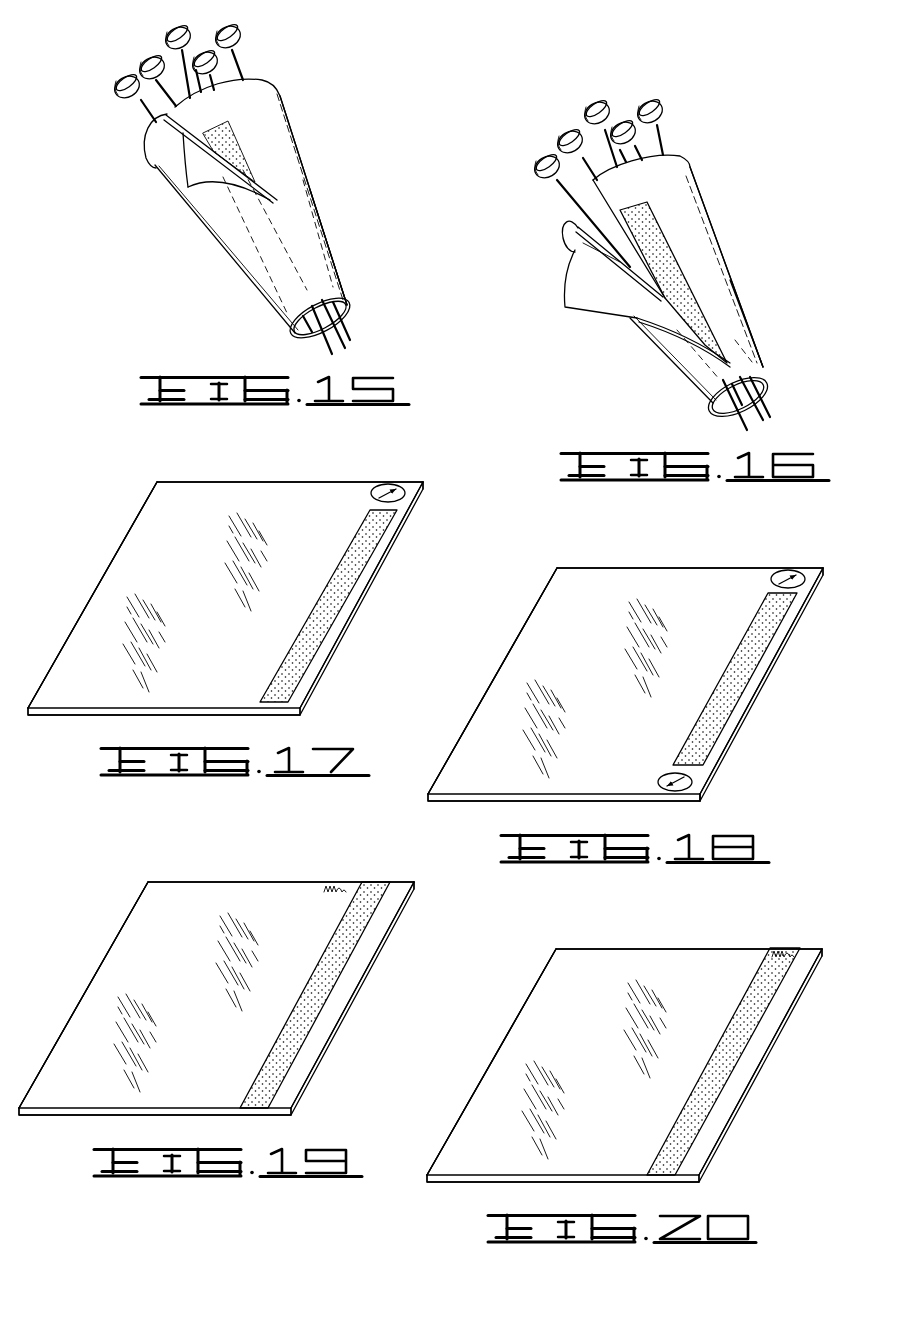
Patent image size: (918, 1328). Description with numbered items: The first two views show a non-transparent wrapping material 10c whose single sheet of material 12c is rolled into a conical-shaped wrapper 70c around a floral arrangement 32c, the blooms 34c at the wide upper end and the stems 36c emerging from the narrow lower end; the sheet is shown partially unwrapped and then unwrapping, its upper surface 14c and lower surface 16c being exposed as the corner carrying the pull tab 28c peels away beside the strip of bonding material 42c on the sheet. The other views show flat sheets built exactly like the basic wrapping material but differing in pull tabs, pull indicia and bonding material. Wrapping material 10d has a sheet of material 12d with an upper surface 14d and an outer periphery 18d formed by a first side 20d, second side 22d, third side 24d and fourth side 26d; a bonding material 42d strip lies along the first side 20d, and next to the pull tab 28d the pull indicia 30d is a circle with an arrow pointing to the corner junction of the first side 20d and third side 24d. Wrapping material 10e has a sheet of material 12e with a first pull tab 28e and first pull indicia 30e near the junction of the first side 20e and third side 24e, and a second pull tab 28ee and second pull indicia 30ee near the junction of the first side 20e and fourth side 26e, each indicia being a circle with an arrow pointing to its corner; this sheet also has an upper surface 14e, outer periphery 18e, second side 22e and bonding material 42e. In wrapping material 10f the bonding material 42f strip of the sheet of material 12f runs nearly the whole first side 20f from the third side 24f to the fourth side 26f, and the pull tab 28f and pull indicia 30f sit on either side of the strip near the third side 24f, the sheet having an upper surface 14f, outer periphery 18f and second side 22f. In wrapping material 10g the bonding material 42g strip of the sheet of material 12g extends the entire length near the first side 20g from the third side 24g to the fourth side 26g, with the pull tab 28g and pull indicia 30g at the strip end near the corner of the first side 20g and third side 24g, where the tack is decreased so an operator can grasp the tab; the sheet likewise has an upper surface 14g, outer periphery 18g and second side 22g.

In FIG. 15, the wrapping material 10c is at (338, 78).
In FIG. 16, the wrapping material 10c is at (757, 153).
In FIG. 15, the sheet of material 12c is at (312, 178).
In FIG. 16, the sheet of material 12c is at (730, 253).
In FIG. 15, the upper surface 14c is at (207, 197).
In FIG. 16, the upper surface 14c is at (588, 283).
In FIG. 15, the lower surface 16c is at (307, 222).
In FIG. 16, the lower surface 16c is at (727, 300).
In FIG. 15, the pull tab 28c is at (200, 203).
In FIG. 16, the pull tab 28c is at (575, 300).
In FIG. 15, the floral arrangement 32c is at (144, 62).
In FIG. 16, the floral arrangement 32c is at (563, 174).
In FIG. 15, the bloom 34c is at (172, 32).
In FIG. 16, the bloom 34c is at (587, 103).
In FIG. 15, the stem 36c is at (338, 328).
In FIG. 16, the stem 36c is at (757, 403).
In FIG. 16, the bonding material 42c is at (657, 233).
In FIG. 15, the conical-shaped wrapper 70c is at (333, 260).
In FIG. 16, the conical-shaped wrapper 70c is at (752, 333).
In FIG. 17, the wrapping material 10d is at (133, 468).
In FIG. 17, the sheet of material 12d is at (217, 478).
In FIG. 17, the upper surface 14d is at (167, 515).
In FIG. 17, the outer periphery 18d is at (115, 553).
In FIG. 17, the first side 20d is at (335, 643).
In FIG. 17, the second side 22d is at (82, 615).
In FIG. 17, the third side 24d is at (303, 480).
In FIG. 17, the fourth side 26d is at (95, 713).
In FIG. 17, the pull tab 28d is at (397, 487).
In FIG. 17, the pull indicia 30d is at (422, 485).
In FIG. 17, the bonding material 42d is at (338, 585).
In FIG. 18, the wrapping material 10e is at (648, 669).
In FIG. 18, the sheet of material 12e is at (625, 660).
In FIG. 18, the upper surface 14e is at (582, 673).
In FIG. 18, the outer periphery 18e is at (492, 681).
In FIG. 18, the first side 20e is at (761, 681).
In FIG. 18, the second side 22e is at (487, 681).
In FIG. 18, the third side 24e is at (690, 549).
In FIG. 18, the fourth side 26e is at (564, 814).
In FIG. 18, the first pull tab 28e is at (817, 560).
In FIG. 18, the first pull indicia 30e is at (850, 580).
In FIG. 18, the second pull tab 28ee is at (716, 776).
In FIG. 18, the second pull indicia 30ee is at (743, 799).
In FIG. 18, the bonding material 42e is at (751, 679).
In FIG. 19, the wrapping material 10f is at (242, 990).
In FIG. 19, the sheet of material 12f is at (216, 974).
In FIG. 19, the upper surface 14f is at (173, 987).
In FIG. 19, the outer periphery 18f is at (83, 995).
In FIG. 19, the first side 20f is at (352, 995).
In FIG. 19, the second side 22f is at (83, 995).
In FIG. 19, the third side 24f is at (281, 863).
In FIG. 19, the fourth side 26f is at (155, 1129).
In FIG. 19, the pull tab 28f is at (388, 869).
In FIG. 19, the pull indicia 30f is at (439, 893).
In FIG. 19, the bonding material 42f is at (327, 995).
In FIG. 20, the wrapping material 10g is at (642, 1059).
In FIG. 20, the sheet of material 12g is at (624, 1041).
In FIG. 20, the upper surface 14g is at (581, 1054).
In FIG. 20, the outer periphery 18g is at (491, 1062).
In FIG. 20, the first side 20g is at (760, 1062).
In FIG. 20, the second side 22g is at (486, 1062).
In FIG. 20, the third side 24g is at (689, 930).
In FIG. 20, the fourth side 26g is at (561, 1196).
In FIG. 20, the pull tab 28g is at (818, 935).
In FIG. 20, the pull indicia 30g is at (836, 962).
In FIG. 20, the bonding material 42g is at (737, 1061).